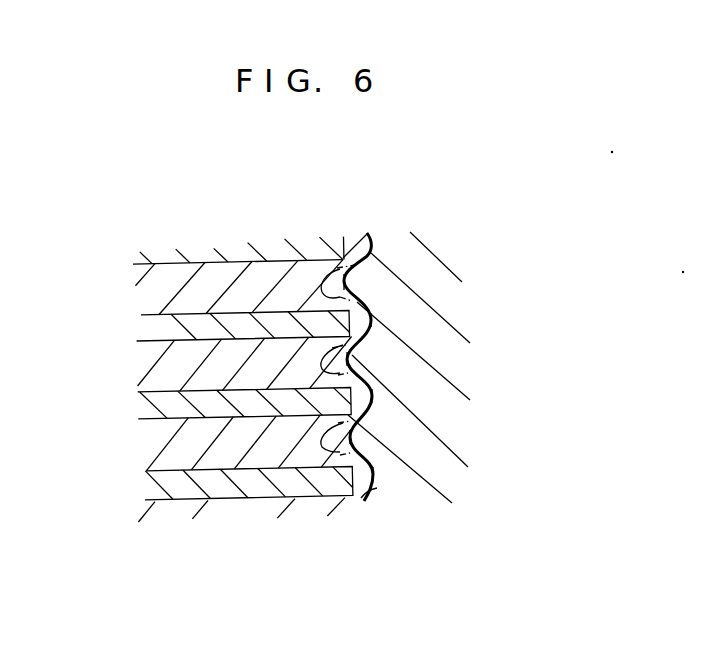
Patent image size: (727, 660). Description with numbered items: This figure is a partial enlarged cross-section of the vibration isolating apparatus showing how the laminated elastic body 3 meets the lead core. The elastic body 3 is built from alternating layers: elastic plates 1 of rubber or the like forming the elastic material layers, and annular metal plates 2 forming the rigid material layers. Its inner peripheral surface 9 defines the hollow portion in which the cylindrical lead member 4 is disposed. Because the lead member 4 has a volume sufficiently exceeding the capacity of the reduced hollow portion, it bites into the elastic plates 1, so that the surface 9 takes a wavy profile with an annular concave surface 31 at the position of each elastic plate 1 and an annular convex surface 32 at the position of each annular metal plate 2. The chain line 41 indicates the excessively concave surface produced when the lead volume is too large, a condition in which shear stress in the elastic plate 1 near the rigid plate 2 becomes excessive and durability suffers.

The elastic plate 1 is at (170, 260).
The annular metal plate 2 is at (230, 248).
The elastic body 3 is at (242, 506).
The cylindrical lead member 4 is at (440, 285).
The inner peripheral surface 9 is at (373, 250).
The annular concave surface 31 is at (348, 284).
The annular convex surface 32 is at (371, 327).
The excessively concave surface 41 is at (344, 282).